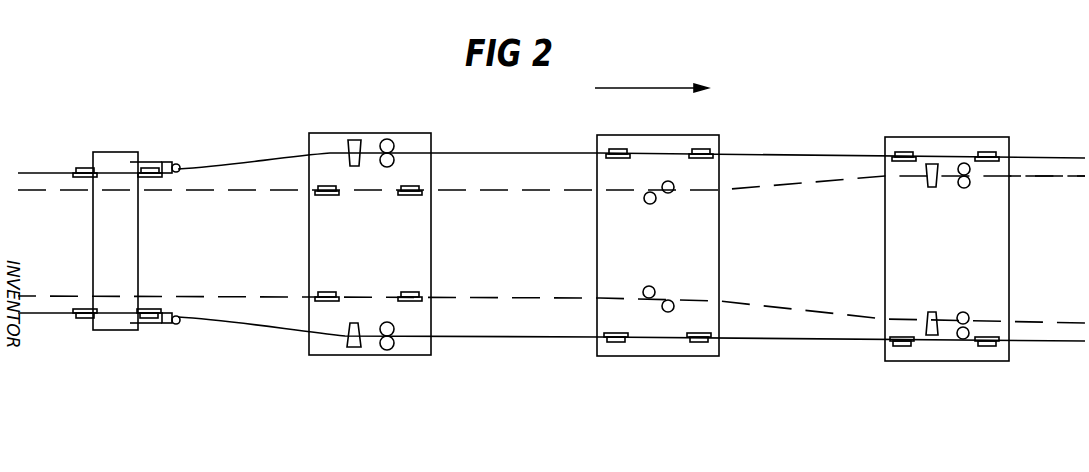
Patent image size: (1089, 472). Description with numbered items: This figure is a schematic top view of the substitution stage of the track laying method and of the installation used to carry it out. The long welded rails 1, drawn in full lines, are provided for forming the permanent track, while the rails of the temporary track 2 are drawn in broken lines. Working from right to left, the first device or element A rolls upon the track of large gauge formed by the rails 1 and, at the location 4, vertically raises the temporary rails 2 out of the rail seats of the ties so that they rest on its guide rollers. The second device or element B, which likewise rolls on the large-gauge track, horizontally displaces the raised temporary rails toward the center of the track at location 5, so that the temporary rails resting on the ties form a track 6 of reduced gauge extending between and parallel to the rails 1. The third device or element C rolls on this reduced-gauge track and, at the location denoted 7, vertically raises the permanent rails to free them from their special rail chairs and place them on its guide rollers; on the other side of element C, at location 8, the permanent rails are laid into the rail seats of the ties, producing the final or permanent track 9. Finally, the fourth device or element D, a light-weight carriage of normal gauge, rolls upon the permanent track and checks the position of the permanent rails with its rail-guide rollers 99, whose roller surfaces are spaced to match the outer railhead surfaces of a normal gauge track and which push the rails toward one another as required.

The final or permanent track 9 is at (42, 171).
The fourth device or element D is at (115, 162).
The location where permanent rails are laid 8 is at (163, 162).
The rail-guide rollers 99 is at (179, 165).
The third device or element C is at (329, 142).
The location of vertically raising the permanent rails 7 is at (369, 152).
The track of reduced track gauge 6 is at (500, 189).
The second device or element B is at (610, 142).
The location of horizontal displacement of the temporary rails 5 is at (655, 192).
The long welded rails 1 is at (792, 155).
The first device or element A is at (896, 145).
The location of vertically raising the temporary rails 4 is at (951, 173).
The rails of the temporary track 2 is at (1036, 174).